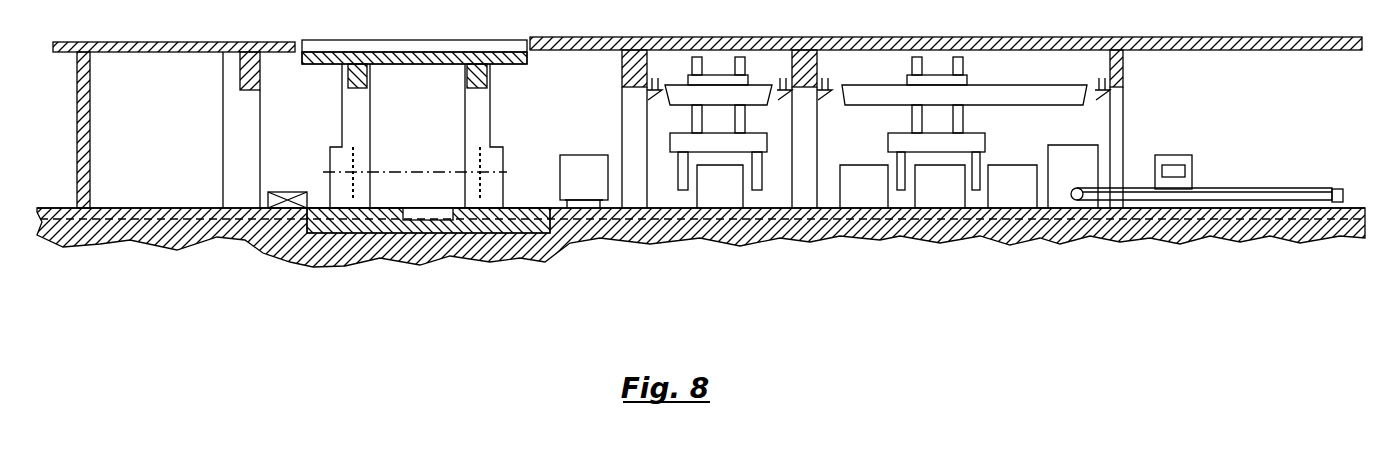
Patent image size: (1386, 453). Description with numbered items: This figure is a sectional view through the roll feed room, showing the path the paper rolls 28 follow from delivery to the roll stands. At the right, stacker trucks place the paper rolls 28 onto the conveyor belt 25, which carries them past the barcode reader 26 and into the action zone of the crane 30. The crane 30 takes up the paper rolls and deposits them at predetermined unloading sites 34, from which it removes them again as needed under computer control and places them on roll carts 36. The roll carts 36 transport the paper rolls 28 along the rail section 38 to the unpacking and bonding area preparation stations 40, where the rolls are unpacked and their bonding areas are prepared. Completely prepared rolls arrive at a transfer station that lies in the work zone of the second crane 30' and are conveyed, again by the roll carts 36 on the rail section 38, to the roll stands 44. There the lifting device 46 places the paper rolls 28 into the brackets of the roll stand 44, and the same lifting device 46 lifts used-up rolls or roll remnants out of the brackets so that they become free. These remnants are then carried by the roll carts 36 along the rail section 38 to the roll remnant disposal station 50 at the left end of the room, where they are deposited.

The conveyor belt 25 is at (1230, 210).
The barcode reader 26 is at (1135, 212).
The paper rolls 28 is at (955, 188).
The crane 30 is at (952, 183).
The crane 30' is at (718, 183).
The unloading sites 34 is at (848, 193).
The roll carts 36 is at (628, 208).
The rail section 38 is at (762, 232).
The unpacking and bonding area preparation stations 40 is at (588, 208).
The roll stands 44 is at (397, 172).
The lifting device 46 is at (458, 215).
The roll remnant disposal station 50 is at (278, 209).